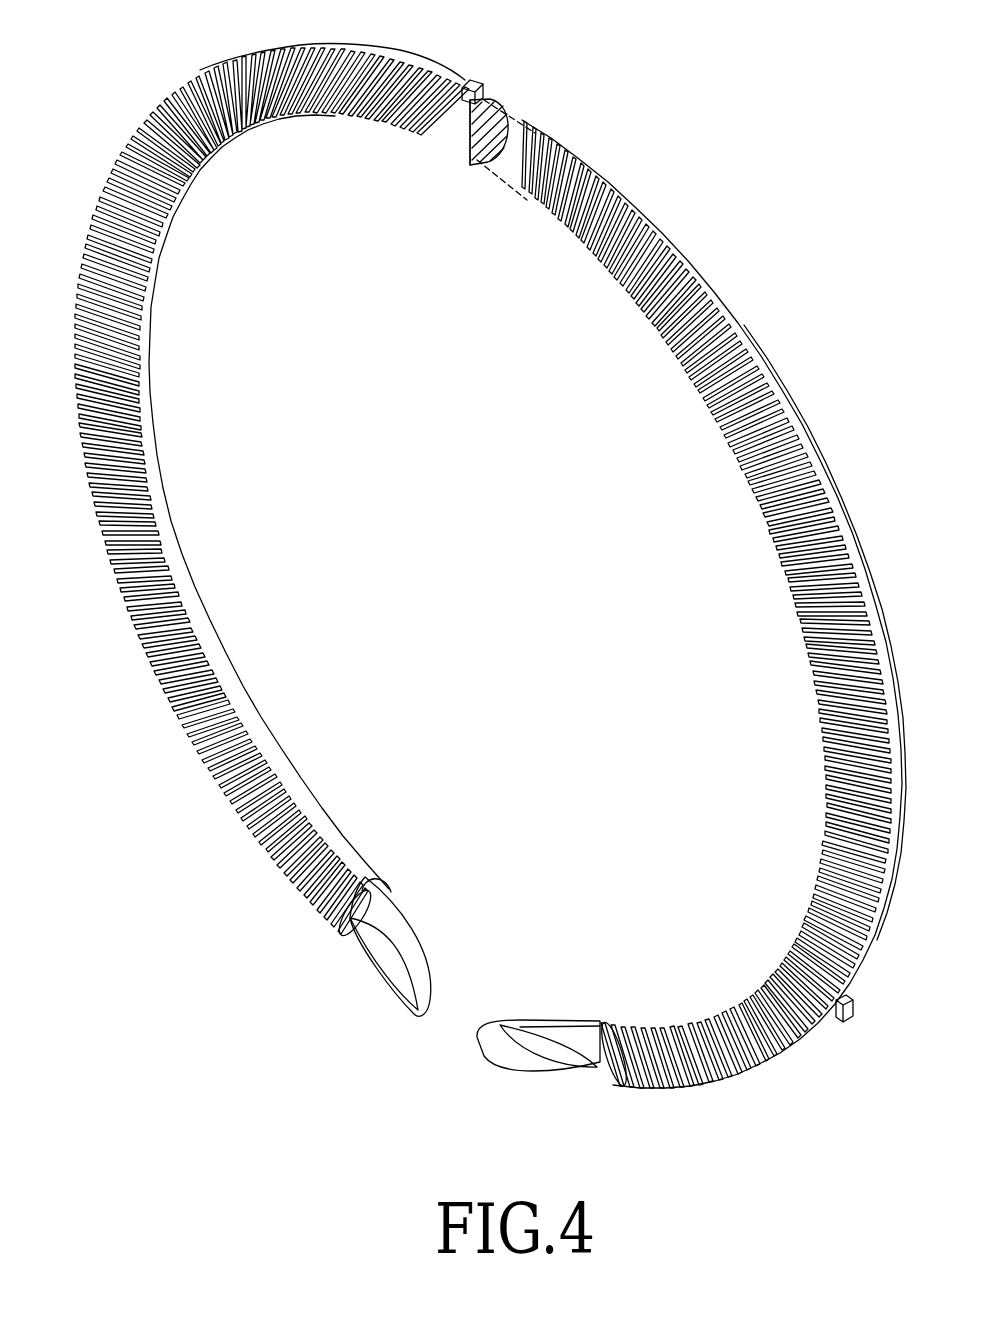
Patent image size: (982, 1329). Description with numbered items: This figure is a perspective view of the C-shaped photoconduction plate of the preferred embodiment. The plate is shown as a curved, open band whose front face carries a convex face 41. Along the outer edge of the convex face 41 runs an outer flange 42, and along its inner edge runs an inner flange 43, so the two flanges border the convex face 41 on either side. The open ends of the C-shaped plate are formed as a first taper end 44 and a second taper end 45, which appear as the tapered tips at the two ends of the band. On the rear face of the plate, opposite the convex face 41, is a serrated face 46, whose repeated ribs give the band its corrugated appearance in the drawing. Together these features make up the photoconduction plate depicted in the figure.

The convex face 41 is at (502, 130).
The outer flange 42 is at (483, 103).
The inner flange 43 is at (472, 167).
The first taper end 44 is at (417, 953).
The second taper end 45 is at (522, 1038).
The serrated face 46 is at (430, 86).